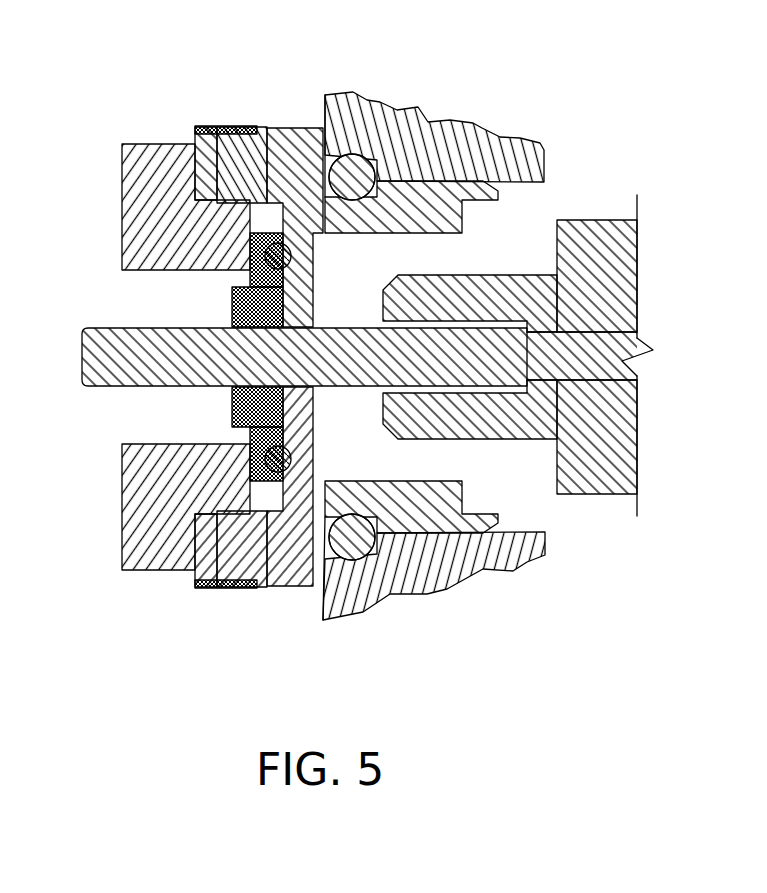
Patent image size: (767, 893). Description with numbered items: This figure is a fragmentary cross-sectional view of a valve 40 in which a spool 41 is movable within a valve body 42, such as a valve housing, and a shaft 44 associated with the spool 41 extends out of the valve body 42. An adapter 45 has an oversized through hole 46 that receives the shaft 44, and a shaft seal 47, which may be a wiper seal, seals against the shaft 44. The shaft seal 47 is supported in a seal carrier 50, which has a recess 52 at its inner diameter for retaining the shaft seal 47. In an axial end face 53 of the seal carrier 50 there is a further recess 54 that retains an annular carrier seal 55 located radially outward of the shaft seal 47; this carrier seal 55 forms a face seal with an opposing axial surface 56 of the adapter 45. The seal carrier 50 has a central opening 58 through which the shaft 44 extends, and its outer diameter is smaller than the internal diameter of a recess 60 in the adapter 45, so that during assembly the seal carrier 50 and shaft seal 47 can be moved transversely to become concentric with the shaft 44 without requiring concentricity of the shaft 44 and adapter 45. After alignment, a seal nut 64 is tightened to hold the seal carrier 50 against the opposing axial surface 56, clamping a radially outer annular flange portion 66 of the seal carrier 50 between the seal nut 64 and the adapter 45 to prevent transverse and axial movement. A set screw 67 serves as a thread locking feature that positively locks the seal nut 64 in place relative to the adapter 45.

The valve 40 is at (566, 89).
The spool 41 is at (625, 250).
The valve body 42 is at (322, 617).
The shaft 44 is at (83, 378).
The adapter 45 is at (297, 128).
The oversized through hole 46 is at (323, 327).
The shaft seal 47 is at (266, 390).
The seal carrier 50 is at (230, 302).
The recess 52 is at (248, 401).
The axial end face 53 is at (285, 425).
The recess 54 is at (254, 450).
The annular carrier seal 55 is at (270, 246).
The opposing axial surface 56 is at (281, 216).
The central opening 58 is at (247, 328).
The recess 60 is at (282, 497).
The seal nut 64 is at (123, 189).
The radially outer annular flange portion 66 is at (252, 470).
The set screw 67 is at (227, 130).